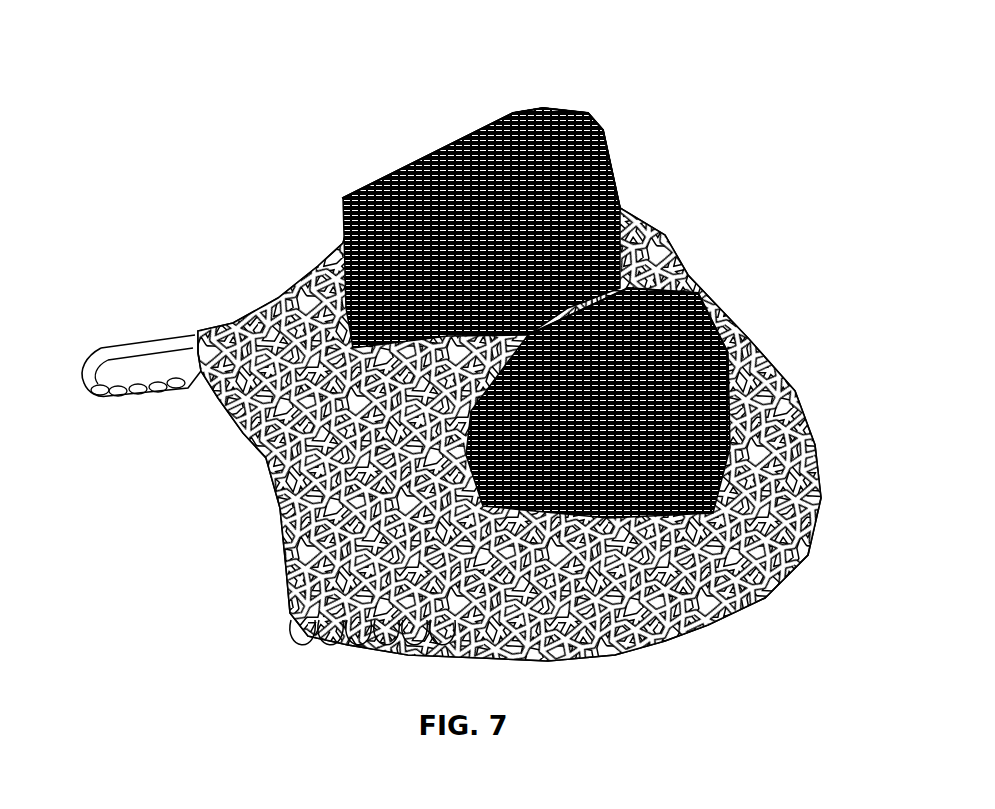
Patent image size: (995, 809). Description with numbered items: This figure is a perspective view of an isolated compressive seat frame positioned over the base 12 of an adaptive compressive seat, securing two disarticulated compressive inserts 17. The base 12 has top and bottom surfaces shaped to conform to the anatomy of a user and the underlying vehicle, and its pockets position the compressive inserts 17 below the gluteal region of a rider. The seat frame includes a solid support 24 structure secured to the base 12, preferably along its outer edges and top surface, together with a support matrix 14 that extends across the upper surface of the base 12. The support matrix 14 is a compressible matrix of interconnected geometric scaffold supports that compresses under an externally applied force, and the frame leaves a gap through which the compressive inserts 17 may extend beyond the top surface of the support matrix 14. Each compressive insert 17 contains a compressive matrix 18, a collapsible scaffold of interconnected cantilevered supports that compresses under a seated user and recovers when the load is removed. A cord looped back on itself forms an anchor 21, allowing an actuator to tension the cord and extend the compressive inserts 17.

The base 12 is at (192, 375).
The support matrix 14 is at (160, 332).
The compressive insert 17 is at (542, 102).
The compressive matrix 18 is at (345, 290).
The anchor 21 is at (675, 543).
The solid support 24 is at (277, 590).